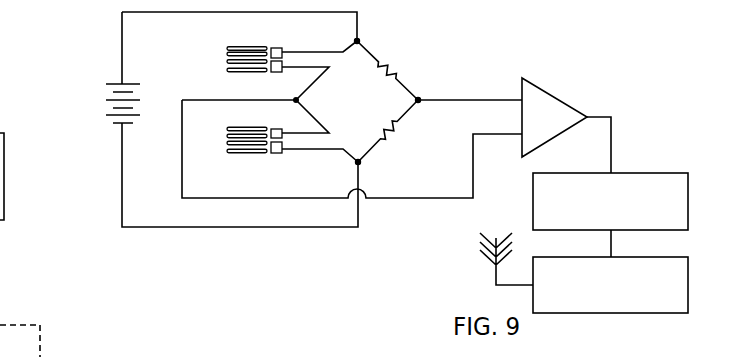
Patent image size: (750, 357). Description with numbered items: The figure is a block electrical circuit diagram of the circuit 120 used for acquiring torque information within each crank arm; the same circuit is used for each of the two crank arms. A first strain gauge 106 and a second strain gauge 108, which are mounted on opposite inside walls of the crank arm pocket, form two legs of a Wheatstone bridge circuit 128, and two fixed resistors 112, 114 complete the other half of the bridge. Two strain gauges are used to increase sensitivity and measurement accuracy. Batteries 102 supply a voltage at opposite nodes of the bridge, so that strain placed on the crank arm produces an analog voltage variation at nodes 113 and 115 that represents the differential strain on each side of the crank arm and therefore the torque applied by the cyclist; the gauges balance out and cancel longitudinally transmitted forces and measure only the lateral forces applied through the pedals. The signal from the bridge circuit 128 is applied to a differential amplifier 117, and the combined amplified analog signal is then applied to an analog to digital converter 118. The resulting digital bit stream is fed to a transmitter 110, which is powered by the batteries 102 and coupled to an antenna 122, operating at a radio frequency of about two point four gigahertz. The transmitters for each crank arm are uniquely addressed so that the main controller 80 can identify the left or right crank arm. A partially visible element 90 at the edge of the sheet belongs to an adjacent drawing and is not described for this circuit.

The main controller 80 is at (20, 341).
The sensor assembly 90 is at (0, 117).
The batteries 102 is at (112, 118).
The first strain gauge 106 is at (238, 72).
The second strain gauge 108 is at (240, 153).
The transmitter 110 is at (668, 257).
The fixed resistor 112 is at (398, 66).
The node 113 is at (352, 38).
The fixed resistor 114 is at (395, 136).
The node 115 is at (352, 166).
The differential amplifier 117 is at (547, 88).
The analog to digital converter 118 is at (668, 173).
The circuit 120 is at (650, 55).
The antenna 122 is at (480, 244).
The Wheatstone bridge circuit 128 is at (444, 78).